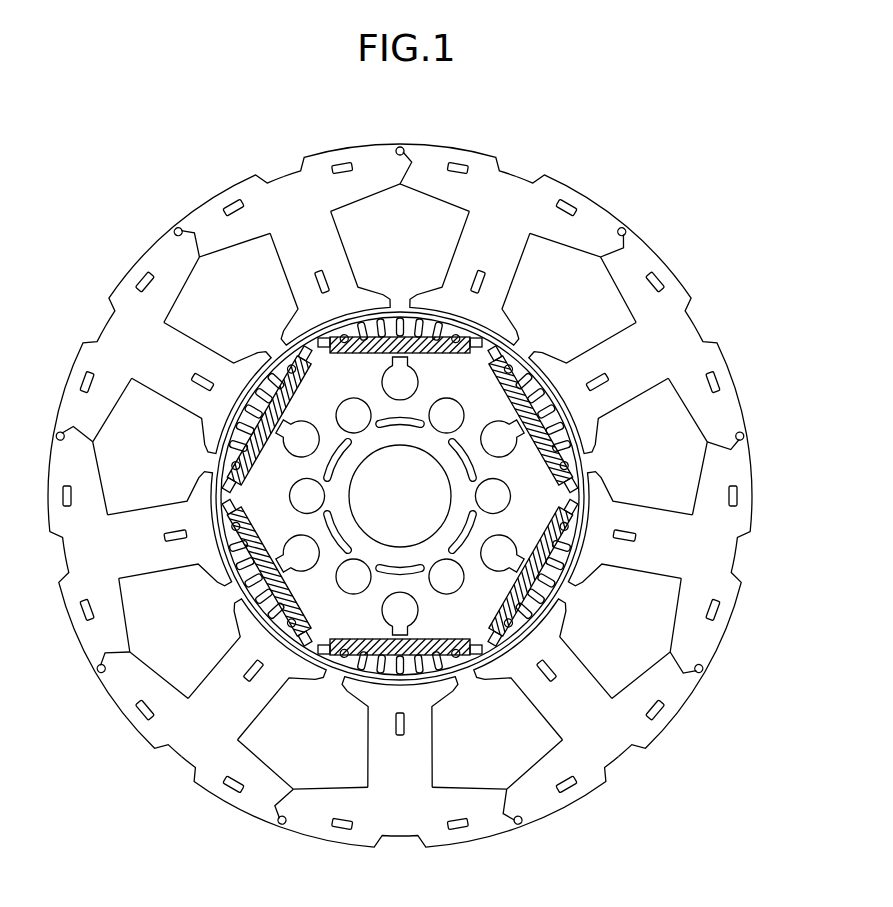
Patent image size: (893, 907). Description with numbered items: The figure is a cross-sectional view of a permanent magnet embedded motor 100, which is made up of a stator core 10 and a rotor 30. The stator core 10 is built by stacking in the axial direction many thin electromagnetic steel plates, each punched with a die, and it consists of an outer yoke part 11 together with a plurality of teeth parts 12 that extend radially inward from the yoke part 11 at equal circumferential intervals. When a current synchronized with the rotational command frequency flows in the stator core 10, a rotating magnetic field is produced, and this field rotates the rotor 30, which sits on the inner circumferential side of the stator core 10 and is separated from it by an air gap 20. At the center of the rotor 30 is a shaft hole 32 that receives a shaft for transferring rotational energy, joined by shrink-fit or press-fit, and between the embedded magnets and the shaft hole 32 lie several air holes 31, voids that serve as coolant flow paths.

The motor 100 is at (406, 491).
The stator core 10 is at (400, 505).
The yoke part 11 is at (660, 302).
The teeth part 12 is at (623, 368).
The air gap 20 is at (406, 454).
The rotor 30 is at (354, 454).
The air hole 31 is at (297, 438).
The shaft hole 32 is at (422, 522).